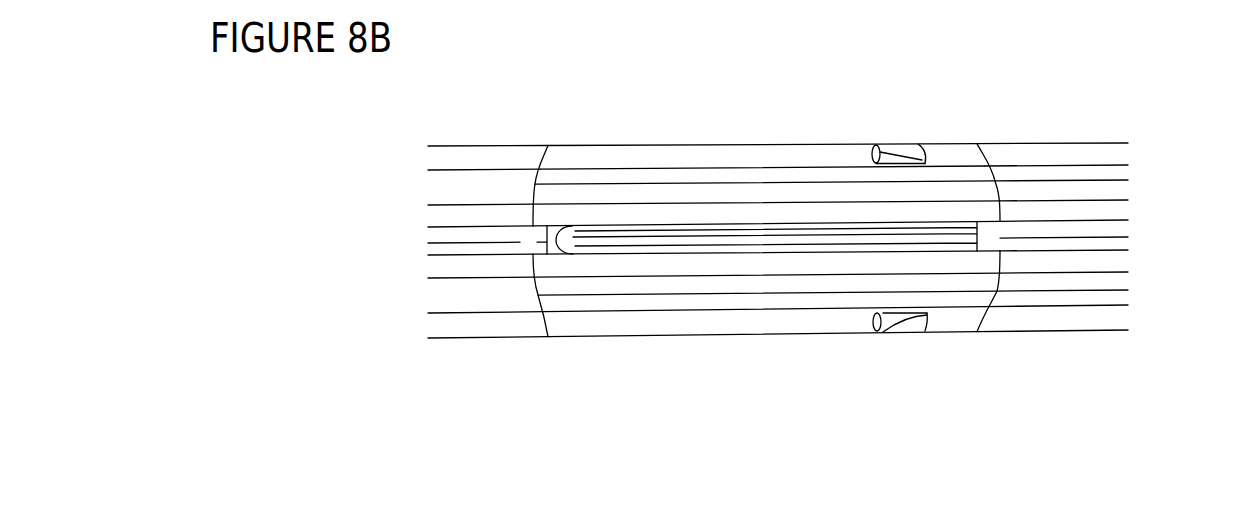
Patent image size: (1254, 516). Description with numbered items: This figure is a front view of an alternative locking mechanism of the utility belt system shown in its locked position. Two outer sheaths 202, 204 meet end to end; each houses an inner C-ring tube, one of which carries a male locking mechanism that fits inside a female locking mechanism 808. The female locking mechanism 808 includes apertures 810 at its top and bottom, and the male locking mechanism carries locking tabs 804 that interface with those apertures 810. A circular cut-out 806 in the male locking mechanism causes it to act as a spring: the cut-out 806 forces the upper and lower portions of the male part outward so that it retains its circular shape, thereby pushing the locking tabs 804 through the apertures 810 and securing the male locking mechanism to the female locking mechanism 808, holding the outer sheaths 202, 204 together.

The outer sheath 202 is at (1105, 177).
The outer sheath 204 is at (442, 185).
The locking tabs 804 is at (882, 147).
The circular cut-out 806 is at (570, 229).
The female locking mechanism 808 is at (722, 311).
The apertures 810 is at (920, 144).